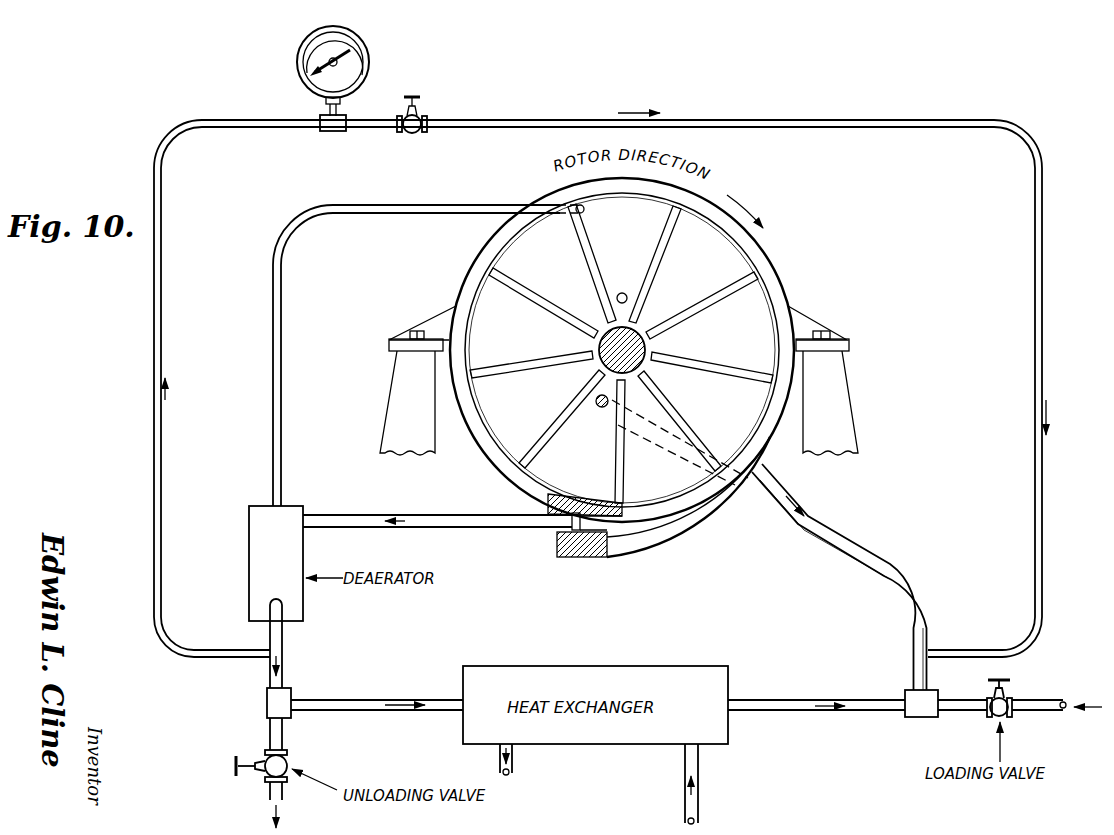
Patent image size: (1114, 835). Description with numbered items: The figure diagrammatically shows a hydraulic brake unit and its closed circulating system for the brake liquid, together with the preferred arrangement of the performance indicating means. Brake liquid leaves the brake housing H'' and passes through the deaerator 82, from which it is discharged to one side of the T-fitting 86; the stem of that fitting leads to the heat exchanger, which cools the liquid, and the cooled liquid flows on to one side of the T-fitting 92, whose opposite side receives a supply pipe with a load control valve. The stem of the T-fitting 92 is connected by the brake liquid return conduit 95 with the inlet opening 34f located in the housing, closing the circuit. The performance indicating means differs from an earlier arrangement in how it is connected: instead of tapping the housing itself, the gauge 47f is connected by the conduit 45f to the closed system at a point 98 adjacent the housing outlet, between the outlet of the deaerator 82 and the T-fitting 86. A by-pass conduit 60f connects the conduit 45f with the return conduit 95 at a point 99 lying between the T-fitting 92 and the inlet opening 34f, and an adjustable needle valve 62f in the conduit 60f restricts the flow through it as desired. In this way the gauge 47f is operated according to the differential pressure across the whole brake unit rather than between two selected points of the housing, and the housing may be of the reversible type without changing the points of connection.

The conduit 45f is at (153, 328).
The by-pass conduit 60f is at (778, 121).
The gauge 47f is at (297, 64).
The adjustable needle valve 62f is at (414, 100).
The inlet opening 34f is at (600, 407).
The housing H'' is at (659, 497).
The deaerator 82 is at (249, 563).
The connection point 98 is at (284, 651).
The T-fitting 86 is at (267, 703).
The brake liquid return conduit 95 is at (892, 566).
The connection point 99 is at (914, 653).
The T-fitting 92 is at (916, 716).